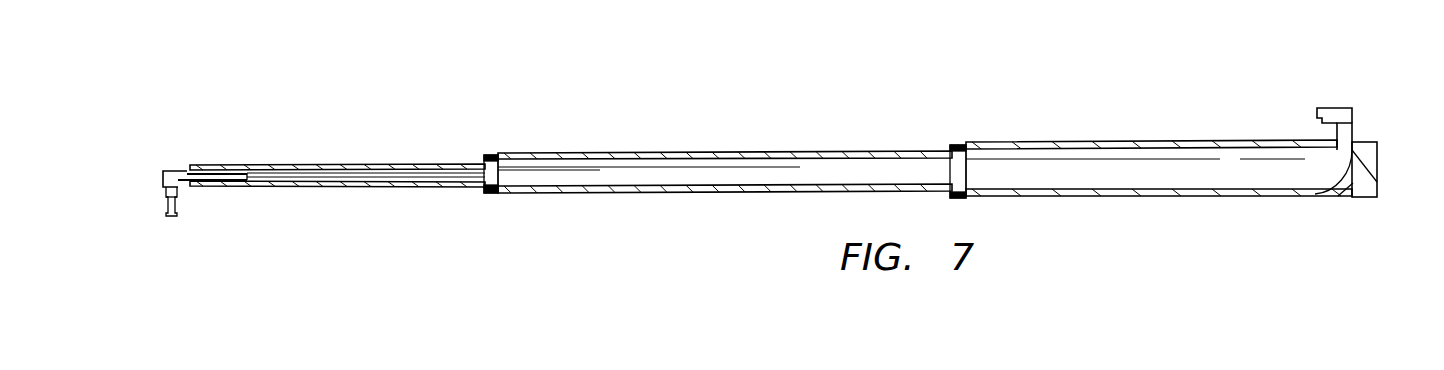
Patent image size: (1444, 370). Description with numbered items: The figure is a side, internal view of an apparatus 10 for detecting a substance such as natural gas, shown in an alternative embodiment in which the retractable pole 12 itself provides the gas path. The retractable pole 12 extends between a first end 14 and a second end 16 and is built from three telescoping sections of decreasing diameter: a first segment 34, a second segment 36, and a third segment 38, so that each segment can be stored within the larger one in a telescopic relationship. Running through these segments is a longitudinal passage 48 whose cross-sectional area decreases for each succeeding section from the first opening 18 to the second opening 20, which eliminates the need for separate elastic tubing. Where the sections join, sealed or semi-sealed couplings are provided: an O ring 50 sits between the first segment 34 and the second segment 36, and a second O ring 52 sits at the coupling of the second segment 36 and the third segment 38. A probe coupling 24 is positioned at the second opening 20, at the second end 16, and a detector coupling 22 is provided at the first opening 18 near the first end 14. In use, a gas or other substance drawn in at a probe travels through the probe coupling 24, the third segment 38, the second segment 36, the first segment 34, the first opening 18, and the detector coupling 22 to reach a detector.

The apparatus 10 is at (344, 276).
The retractable pole 12 is at (712, 204).
The first end 14 is at (1378, 168).
The second end 16 is at (190, 192).
The first opening 18 is at (1353, 142).
The second opening 20 is at (190, 164).
The detector coupling 22 is at (1335, 98).
The probe coupling 24 is at (152, 183).
The first segment 34 is at (1213, 141).
The second segment 36 is at (720, 152).
The third segment 38 is at (330, 165).
The longitudinal passage 48 is at (1076, 172).
The O ring 50 is at (958, 145).
The O ring 52 is at (489, 155).